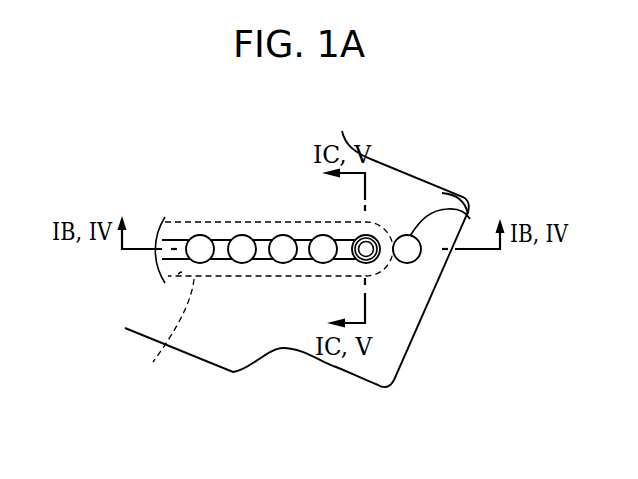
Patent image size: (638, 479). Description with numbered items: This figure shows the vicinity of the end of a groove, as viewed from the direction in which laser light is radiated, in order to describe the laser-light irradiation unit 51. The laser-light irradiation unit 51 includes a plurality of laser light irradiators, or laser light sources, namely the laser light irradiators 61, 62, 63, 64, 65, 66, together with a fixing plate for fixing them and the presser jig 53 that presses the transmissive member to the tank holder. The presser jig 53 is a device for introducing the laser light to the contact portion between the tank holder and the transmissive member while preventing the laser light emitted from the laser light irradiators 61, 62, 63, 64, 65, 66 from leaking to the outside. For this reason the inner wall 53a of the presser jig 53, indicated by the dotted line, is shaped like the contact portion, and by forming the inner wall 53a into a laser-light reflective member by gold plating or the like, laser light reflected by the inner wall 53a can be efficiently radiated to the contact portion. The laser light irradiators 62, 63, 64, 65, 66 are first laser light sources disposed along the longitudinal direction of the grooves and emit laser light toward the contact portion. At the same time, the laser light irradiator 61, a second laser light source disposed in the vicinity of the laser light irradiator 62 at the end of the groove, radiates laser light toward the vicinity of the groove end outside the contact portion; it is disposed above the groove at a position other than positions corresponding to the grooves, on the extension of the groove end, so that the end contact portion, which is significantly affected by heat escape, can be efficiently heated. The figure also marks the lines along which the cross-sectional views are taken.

The laser-light irradiation unit 51 is at (429, 116).
The presser jig 53 is at (217, 338).
The inner wall 53a is at (167, 336).
The laser light irradiator 61 is at (472, 221).
The laser light irradiator 62 is at (377, 227).
The laser light irradiator 63 is at (323, 235).
The laser light irradiator 64 is at (283, 235).
The laser light irradiator 65 is at (242, 235).
The laser light irradiator 66 is at (200, 235).